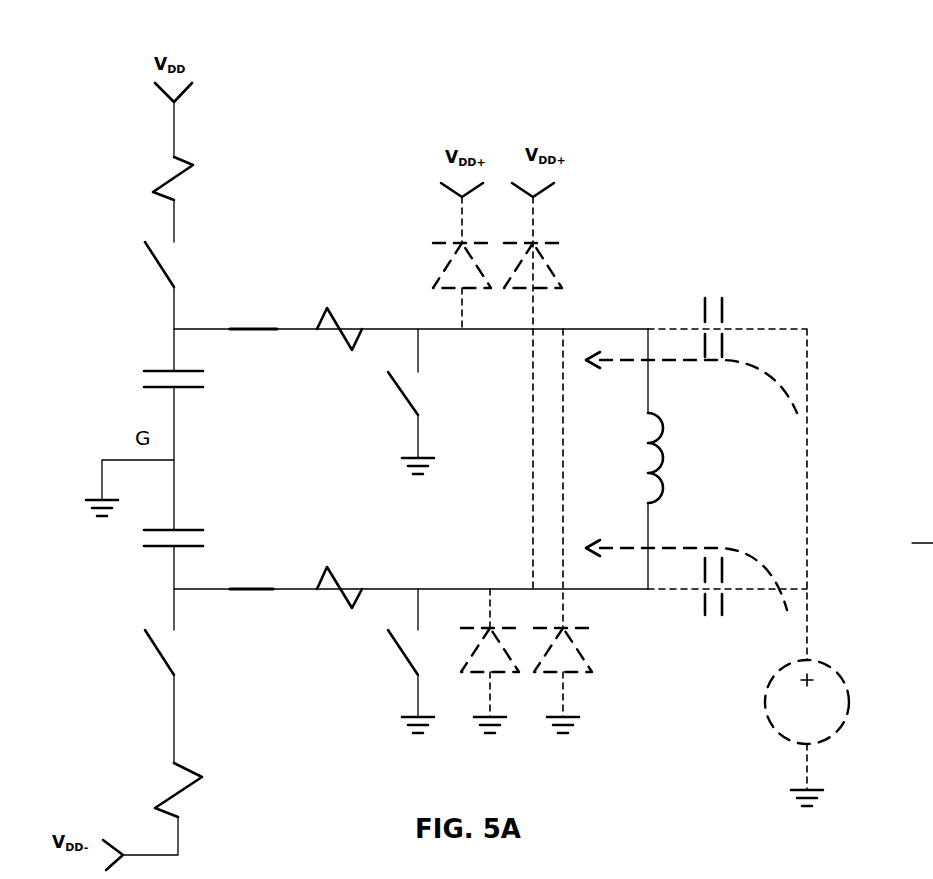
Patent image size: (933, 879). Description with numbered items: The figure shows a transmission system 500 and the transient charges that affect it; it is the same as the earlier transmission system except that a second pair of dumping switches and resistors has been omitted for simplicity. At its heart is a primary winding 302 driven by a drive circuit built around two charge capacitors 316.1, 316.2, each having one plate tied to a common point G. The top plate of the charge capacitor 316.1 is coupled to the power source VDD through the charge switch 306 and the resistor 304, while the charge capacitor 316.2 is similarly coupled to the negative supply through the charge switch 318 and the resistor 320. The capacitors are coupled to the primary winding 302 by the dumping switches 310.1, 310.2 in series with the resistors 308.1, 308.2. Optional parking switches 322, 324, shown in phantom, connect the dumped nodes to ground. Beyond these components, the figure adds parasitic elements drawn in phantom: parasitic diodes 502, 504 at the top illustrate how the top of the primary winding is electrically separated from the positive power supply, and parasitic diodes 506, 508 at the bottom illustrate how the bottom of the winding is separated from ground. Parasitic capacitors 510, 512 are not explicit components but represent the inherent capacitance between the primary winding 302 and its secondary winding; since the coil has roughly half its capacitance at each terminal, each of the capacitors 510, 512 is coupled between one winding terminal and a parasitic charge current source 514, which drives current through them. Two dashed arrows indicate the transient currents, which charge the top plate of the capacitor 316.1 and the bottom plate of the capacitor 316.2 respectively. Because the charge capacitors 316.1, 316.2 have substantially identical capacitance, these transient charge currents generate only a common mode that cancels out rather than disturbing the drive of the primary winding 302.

The transmission system 500 is at (507, 107).
The primary winding 302 is at (673, 465).
The resistor 304 is at (203, 155).
The charge switch 306 is at (187, 258).
The resistor 308.1 is at (347, 317).
The resistor 308.2 is at (353, 578).
The dumping switch 310.1 is at (260, 318).
The dumping switch 310.2 is at (252, 578).
The charge capacitor 316.1 is at (137, 378).
The charge capacitor 316.2 is at (137, 540).
The charge switch 318 is at (180, 640).
The resistor 320 is at (187, 803).
The parking switch 322 is at (423, 395).
The parking switch 324 is at (382, 655).
The parasitic diode 502 is at (430, 242).
The parasitic diode 504 is at (563, 240).
The parasitic diode 506 is at (462, 652).
The parasitic diode 508 is at (597, 642).
The parasitic capacitor 510 is at (727, 320).
The parasitic capacitor 512 is at (715, 615).
The parasitic charge current source 514 is at (849, 715).